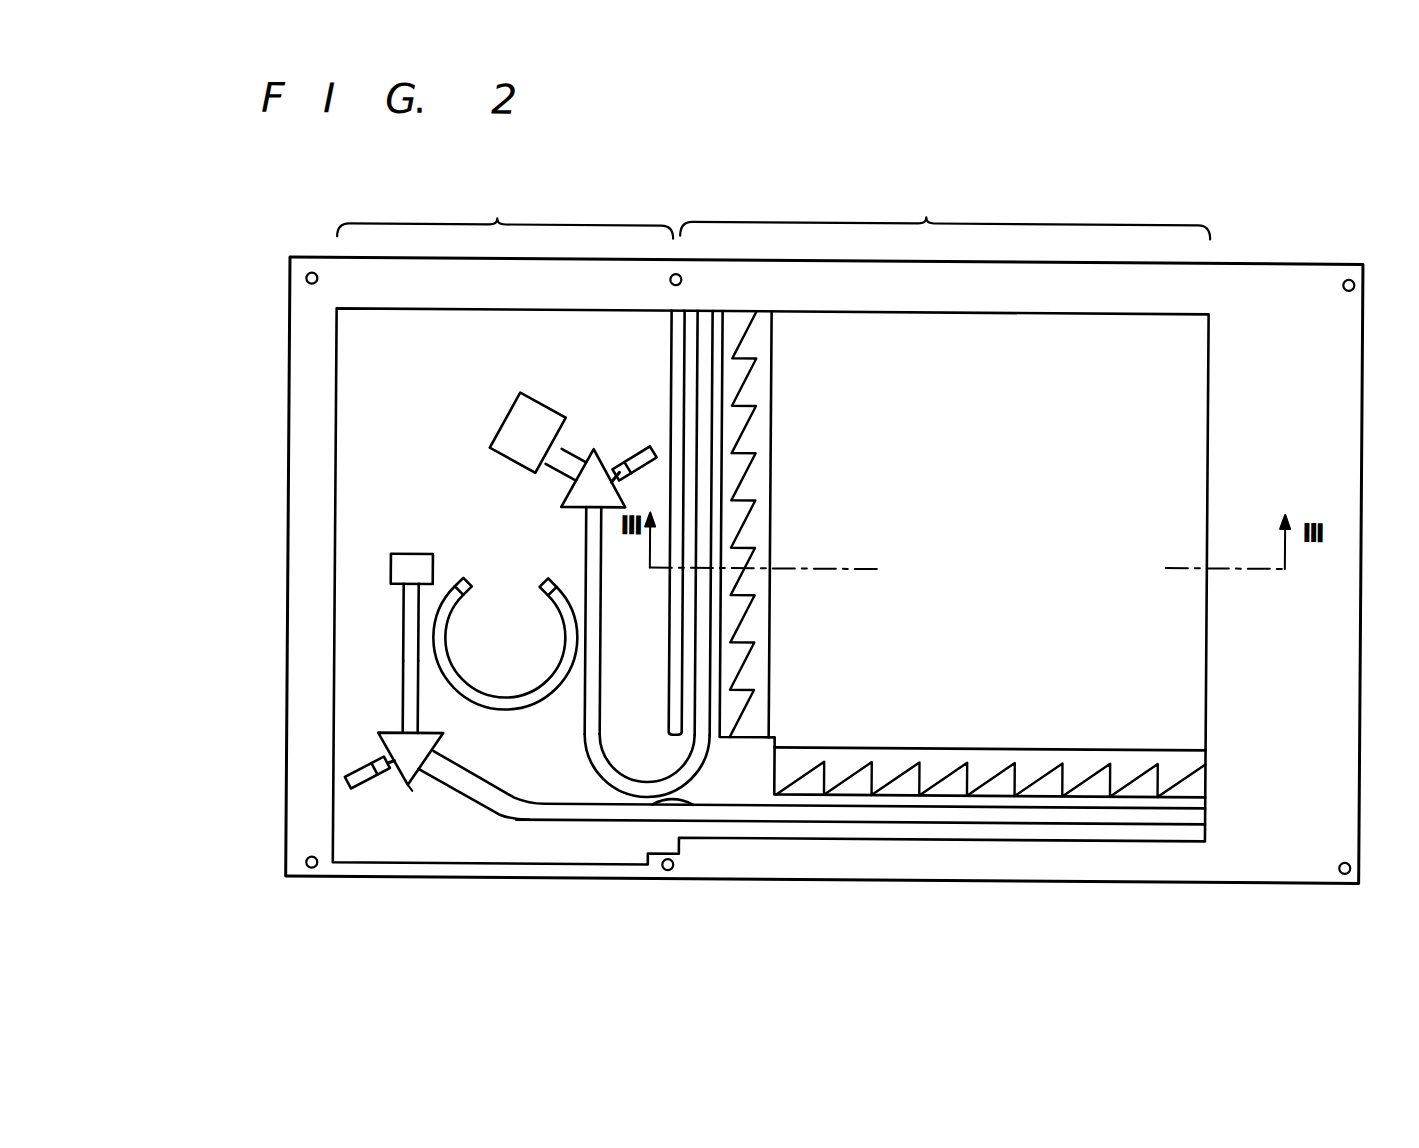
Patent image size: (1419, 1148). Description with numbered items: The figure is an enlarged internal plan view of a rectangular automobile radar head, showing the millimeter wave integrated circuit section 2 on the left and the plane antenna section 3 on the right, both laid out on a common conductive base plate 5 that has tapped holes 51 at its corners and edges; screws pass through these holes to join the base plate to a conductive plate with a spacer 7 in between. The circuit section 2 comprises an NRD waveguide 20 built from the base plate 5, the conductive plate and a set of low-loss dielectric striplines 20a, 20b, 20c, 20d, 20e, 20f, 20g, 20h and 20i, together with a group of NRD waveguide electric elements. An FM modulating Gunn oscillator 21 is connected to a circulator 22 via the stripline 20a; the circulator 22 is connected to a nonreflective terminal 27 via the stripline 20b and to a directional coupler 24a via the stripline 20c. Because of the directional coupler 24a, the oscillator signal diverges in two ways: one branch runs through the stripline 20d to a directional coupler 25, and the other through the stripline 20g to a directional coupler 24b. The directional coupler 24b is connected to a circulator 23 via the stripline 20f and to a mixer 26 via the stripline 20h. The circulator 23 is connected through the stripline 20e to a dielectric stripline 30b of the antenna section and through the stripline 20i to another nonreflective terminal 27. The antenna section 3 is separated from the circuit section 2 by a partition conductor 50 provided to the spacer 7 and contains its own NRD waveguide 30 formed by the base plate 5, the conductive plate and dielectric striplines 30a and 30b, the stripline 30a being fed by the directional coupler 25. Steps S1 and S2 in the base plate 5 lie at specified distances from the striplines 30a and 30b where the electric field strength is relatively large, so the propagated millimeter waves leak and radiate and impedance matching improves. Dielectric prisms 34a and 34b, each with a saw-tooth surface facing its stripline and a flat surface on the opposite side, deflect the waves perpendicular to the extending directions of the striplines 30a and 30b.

The millimeter wave integrated circuit section 2 is at (505, 208).
The plane antenna section 3 is at (945, 211).
The conductive base plate 5 is at (1196, 598).
The spacer 7 is at (1343, 628).
The NRD waveguide 20 is at (586, 386).
The dielectric stripline 20a is at (570, 460).
The dielectric stripline 20b is at (647, 492).
The dielectric stripline 20c is at (590, 543).
The dielectric stripline 20d is at (594, 708).
The dielectric stripline 20e is at (567, 804).
The dielectric stripline 20f is at (412, 682).
The dielectric stripline 20g is at (508, 704).
The dielectric stripline 20h is at (407, 612).
The dielectric stripline 20i is at (397, 782).
The FM modulating Gunn oscillator 21 is at (508, 420).
The circulator 22 is at (568, 491).
The circulator 23 is at (394, 733).
The directional coupler 24a is at (583, 642).
The directional coupler 24b is at (428, 628).
The directional coupler 25 is at (699, 806).
The mixer 26 is at (400, 568).
The nonreflective terminal 27 is at (649, 455).
The NRD waveguide 30 is at (867, 605).
The dielectric stripline 30a is at (706, 612).
The dielectric stripline 30b is at (881, 818).
The dielectric prism 34a is at (763, 420).
The dielectric prism 34b is at (1040, 760).
The partition conductor 50 is at (690, 500).
The tapped hole 51 is at (306, 278).
The step S1 is at (722, 647).
The step S2 is at (821, 797).